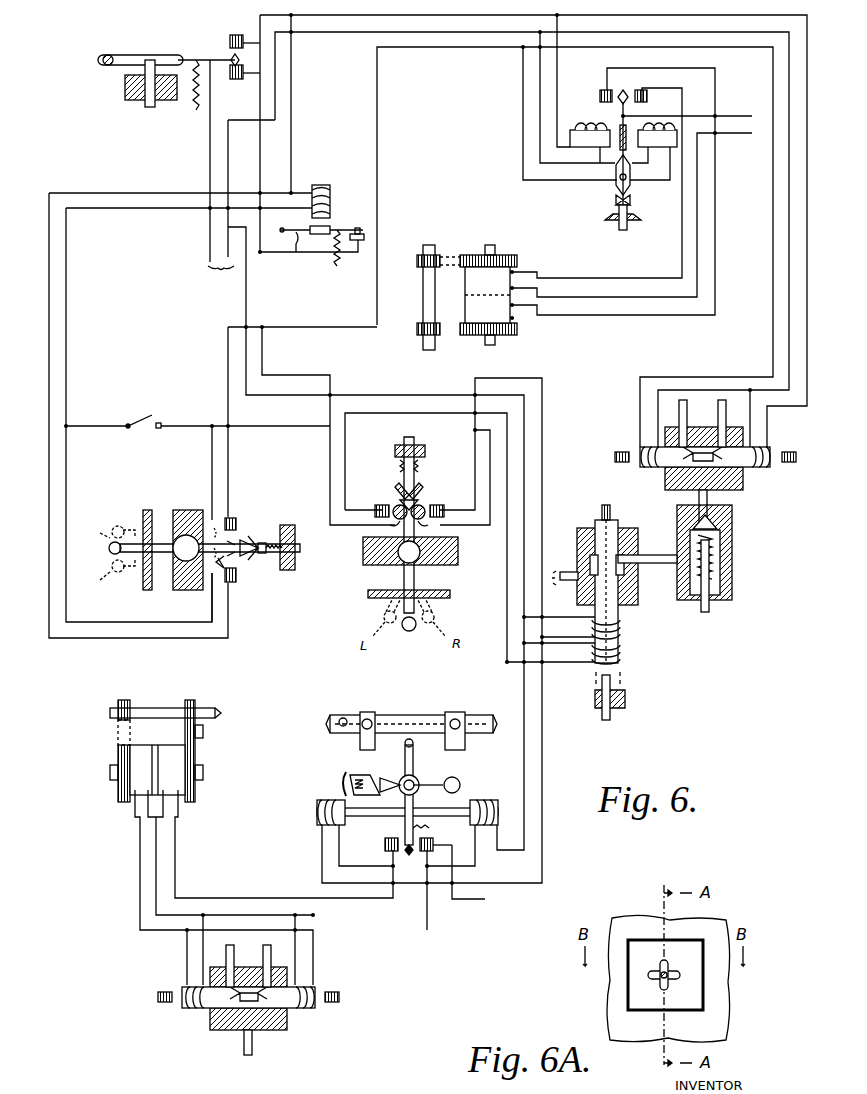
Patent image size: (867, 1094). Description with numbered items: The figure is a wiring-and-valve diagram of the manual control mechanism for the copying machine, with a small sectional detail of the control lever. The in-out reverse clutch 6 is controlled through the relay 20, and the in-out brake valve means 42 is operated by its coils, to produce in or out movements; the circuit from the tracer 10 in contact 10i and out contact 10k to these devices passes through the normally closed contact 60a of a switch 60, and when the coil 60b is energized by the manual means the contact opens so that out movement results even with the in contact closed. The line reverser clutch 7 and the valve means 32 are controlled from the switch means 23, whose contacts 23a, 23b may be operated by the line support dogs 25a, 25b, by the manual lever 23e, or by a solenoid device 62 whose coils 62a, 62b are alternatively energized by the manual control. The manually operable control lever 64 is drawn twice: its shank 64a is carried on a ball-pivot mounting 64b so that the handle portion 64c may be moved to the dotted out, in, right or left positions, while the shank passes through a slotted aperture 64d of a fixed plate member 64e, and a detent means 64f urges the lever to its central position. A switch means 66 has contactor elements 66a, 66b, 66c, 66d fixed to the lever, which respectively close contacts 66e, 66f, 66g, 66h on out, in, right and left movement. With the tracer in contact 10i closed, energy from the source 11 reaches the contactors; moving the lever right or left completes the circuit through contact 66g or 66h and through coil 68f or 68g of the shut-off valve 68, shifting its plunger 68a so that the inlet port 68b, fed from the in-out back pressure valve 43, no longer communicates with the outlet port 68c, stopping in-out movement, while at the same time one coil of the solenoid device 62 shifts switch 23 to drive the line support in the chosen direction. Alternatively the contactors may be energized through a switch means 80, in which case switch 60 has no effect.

In FIG. 6, the in-out reverse clutch 6 is at (452, 236).
In FIG. 6, the line reverser clutch 7 is at (218, 739).
In FIG. 6, the tracer 10 is at (115, 100).
In FIG. 6, the tracer out contact 10k is at (223, 40).
In FIG. 6, the tracer in contact 10i is at (230, 96).
In FIG. 6, the source 11 is at (220, 279).
In FIG. 6, the relay 20 is at (570, 112).
In FIG. 6, the switch means 23 is at (382, 832).
In FIG. 6, the switch contact 23a is at (386, 845).
In FIG. 6, the switch contact 23b is at (438, 849).
In FIG. 6, the manual lever 23e is at (454, 780).
In FIG. 6, the line support dog 25a is at (360, 734).
In FIG. 6, the line support dog 25b is at (450, 746).
In FIG. 6, the valve means 32 is at (320, 970).
In FIG. 6, the in-out brake valve means 42 is at (772, 425).
In FIG. 6, the in-out back pressure valve 43 is at (734, 549).
In FIG. 6, the switch 60 is at (314, 256).
In FIG. 6, the normally closed contact 60a is at (357, 224).
In FIG. 6, the coil 60b is at (335, 182).
In FIG. 6, the solenoid device 62 is at (310, 816).
In FIG. 6, the solenoid coil 62a is at (326, 800).
In FIG. 6, the solenoid coil 62b is at (476, 804).
In FIG. 6, the manually operable control lever 64 is at (130, 543).
In FIG. 6A, the shank 64a is at (666, 968).
In FIG. 6, the ball-pivot mounting 64b is at (190, 511).
In FIG. 6, the handle portion 64c is at (110, 550).
In FIG. 6A, the slotted aperture 64d is at (659, 982).
In FIG. 6, the fixed plate member 64e is at (151, 510).
In FIG. 6A, the fixed plate member 64e is at (628, 992).
In FIG. 6, the detent means 64f is at (282, 527).
In FIG. 6, the switch means 66 is at (234, 601).
In FIG. 6, the contactor element 66a is at (238, 570).
In FIG. 6, the contactor element 66b is at (247, 538).
In FIG. 6, the contactor element 66c is at (396, 494).
In FIG. 6, the contactor element 66d is at (424, 498).
In FIG. 6, the contact 66e is at (240, 584).
In FIG. 6, the contact 66f is at (238, 516).
In FIG. 6, the contact 66g is at (384, 509).
In FIG. 6, the contact 66h is at (430, 506).
In FIG. 6, the shut-off valve 68 is at (645, 610).
In FIG. 6, the shiftable plunger 68a is at (611, 524).
In FIG. 6, the inlet port 68b is at (632, 548).
In FIG. 6, the outlet port 68c is at (584, 570).
In FIG. 6, the coil 68f is at (623, 634).
In FIG. 6, the coil 68g is at (623, 656).
In FIG. 6, the switch means 80 is at (156, 413).